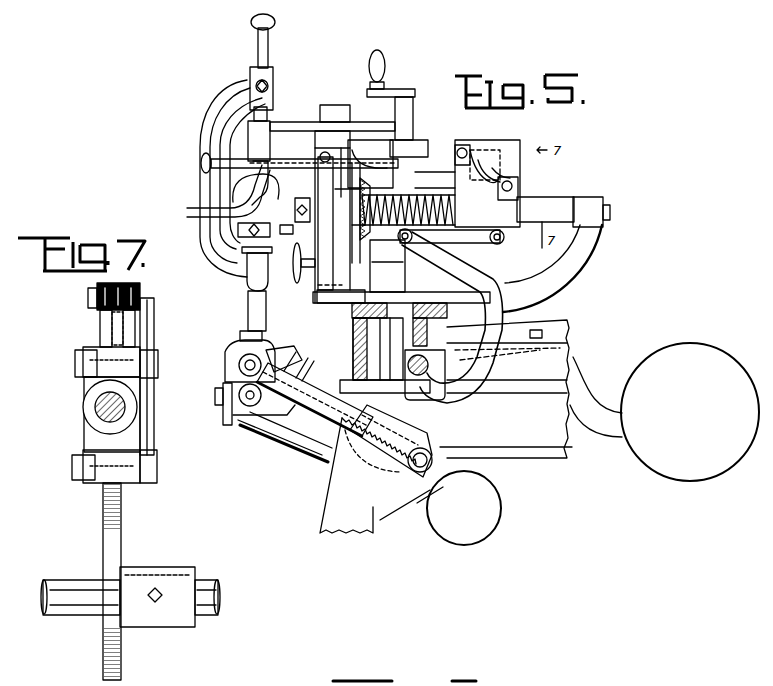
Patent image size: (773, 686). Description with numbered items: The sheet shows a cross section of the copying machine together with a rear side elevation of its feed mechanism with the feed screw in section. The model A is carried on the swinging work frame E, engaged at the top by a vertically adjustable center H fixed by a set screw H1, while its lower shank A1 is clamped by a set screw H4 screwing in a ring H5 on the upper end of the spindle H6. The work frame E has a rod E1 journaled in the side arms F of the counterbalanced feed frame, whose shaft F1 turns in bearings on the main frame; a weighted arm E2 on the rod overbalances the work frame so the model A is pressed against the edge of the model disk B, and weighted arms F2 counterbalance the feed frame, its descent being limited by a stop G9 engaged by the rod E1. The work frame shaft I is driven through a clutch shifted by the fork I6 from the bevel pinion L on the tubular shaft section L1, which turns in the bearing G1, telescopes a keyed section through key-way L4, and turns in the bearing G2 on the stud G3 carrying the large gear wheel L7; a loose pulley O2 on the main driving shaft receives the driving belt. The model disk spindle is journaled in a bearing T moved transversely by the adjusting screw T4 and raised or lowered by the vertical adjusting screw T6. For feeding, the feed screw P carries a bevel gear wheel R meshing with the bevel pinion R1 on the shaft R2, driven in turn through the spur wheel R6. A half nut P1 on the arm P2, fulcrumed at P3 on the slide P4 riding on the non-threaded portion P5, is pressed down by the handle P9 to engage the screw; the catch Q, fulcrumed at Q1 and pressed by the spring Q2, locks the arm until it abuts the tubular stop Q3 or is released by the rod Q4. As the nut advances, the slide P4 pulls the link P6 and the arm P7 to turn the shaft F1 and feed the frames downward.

In FIG. 7, the catch Q is at (122, 284).
In FIG. 5, the catch Q is at (480, 162).
In FIG. 7, the loose pulley O2 is at (88, 298).
In FIG. 7, the spring Q2 is at (100, 345).
In FIG. 5, the spring Q2 is at (493, 168).
In FIG. 7, the arm P2 is at (128, 358).
In FIG. 5, the arm P2 is at (445, 172).
In FIG. 7, the fulcrum P3 is at (78, 364).
In FIG. 5, the fulcrum P3 is at (509, 179).
In FIG. 7, the slide P4 is at (92, 393).
In FIG. 5, the slide P4 is at (522, 206).
In FIG. 7, the non-threaded portion P5 is at (98, 412).
In FIG. 5, the non-threaded portion P5 is at (557, 206).
In FIG. 7, the link P6 is at (90, 484).
In FIG. 5, the link P6 is at (476, 241).
In FIG. 7, the arm P7 is at (122, 520).
In FIG. 5, the arm P7 is at (490, 337).
In FIG. 7, the handle P9 is at (153, 410).
In FIG. 5, the handle P9 is at (190, 210).
In FIG. 7, the shaft F1 is at (207, 615).
In FIG. 5, the shaft F1 is at (417, 354).
In FIG. 5, the center H is at (275, 36).
In FIG. 5, the set screw H1 is at (268, 86).
In FIG. 5, the model A is at (254, 150).
In FIG. 5, the work frame E is at (202, 140).
In FIG. 5, the rod Q4 is at (201, 166).
In FIG. 5, the tubular stop Q3 is at (278, 169).
In FIG. 5, the shank A1 is at (294, 209).
In FIG. 5, the set screw H4 is at (238, 230).
In FIG. 5, the ring H5 is at (289, 237).
In FIG. 5, the spindle H6 is at (243, 265).
In FIG. 5, the adjusting screw T4 is at (295, 275).
In FIG. 5, the model disk B is at (303, 121).
In FIG. 5, the half nut P1 is at (370, 158).
In FIG. 5, the vertical adjusting screw T6 is at (406, 93).
In FIG. 5, the bearing T is at (412, 150).
In FIG. 5, the feed screw P is at (408, 203).
In FIG. 5, the bevel gear wheel R is at (366, 200).
In FIG. 5, the bevel pinion R1 is at (407, 243).
In FIG. 5, the fulcrum Q1 is at (465, 146).
In FIG. 5, the shaft R2 is at (376, 345).
In FIG. 5, the weighted arm F2 is at (598, 412).
In FIG. 5, the shifting fork I6 is at (240, 338).
In FIG. 5, the work frame shaft I is at (238, 365).
In FIG. 5, the rod E1 is at (228, 398).
In FIG. 5, the bevel pinion L is at (274, 360).
In FIG. 5, the bearing G1 is at (308, 368).
In FIG. 5, the side arm F is at (330, 372).
In FIG. 5, the key-way L4 is at (386, 407).
In FIG. 5, the stud G3 is at (433, 462).
In FIG. 5, the weighted arm E2 is at (428, 508).
In FIG. 5, the gear wheel L7 is at (374, 520).
In FIG. 5, the bearing G2 is at (379, 457).
In FIG. 5, the spur wheel R6 is at (284, 453).
In FIG. 5, the stop G9 is at (252, 428).
In FIG. 5, the shaft section L1 is at (313, 424).